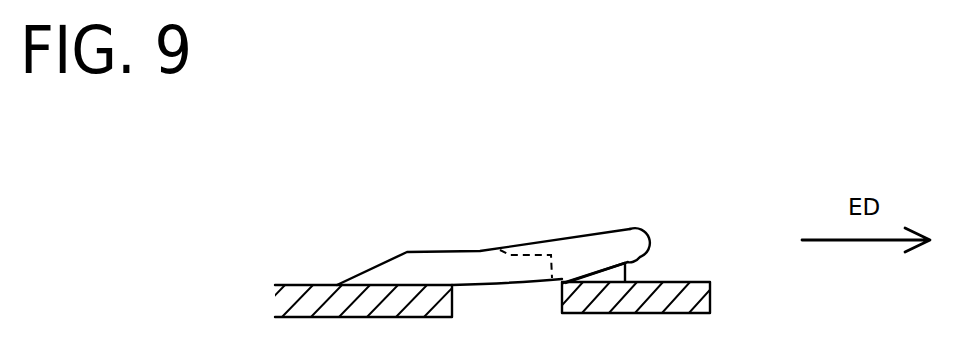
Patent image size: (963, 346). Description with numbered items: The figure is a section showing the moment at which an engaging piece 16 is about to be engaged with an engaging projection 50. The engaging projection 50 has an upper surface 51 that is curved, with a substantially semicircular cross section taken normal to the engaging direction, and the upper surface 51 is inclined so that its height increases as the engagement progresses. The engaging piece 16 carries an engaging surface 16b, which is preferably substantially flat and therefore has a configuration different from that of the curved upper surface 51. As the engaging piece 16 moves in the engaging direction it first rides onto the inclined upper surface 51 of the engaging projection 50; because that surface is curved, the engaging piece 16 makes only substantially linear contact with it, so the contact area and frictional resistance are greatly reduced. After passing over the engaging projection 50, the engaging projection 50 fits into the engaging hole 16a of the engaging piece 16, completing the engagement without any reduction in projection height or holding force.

The engaging piece 16 is at (500, 194).
The engaging hole 16a is at (500, 250).
The engaging surface 16b is at (648, 260).
The engaging projection 50 is at (627, 273).
The upper surface 51 is at (616, 262).